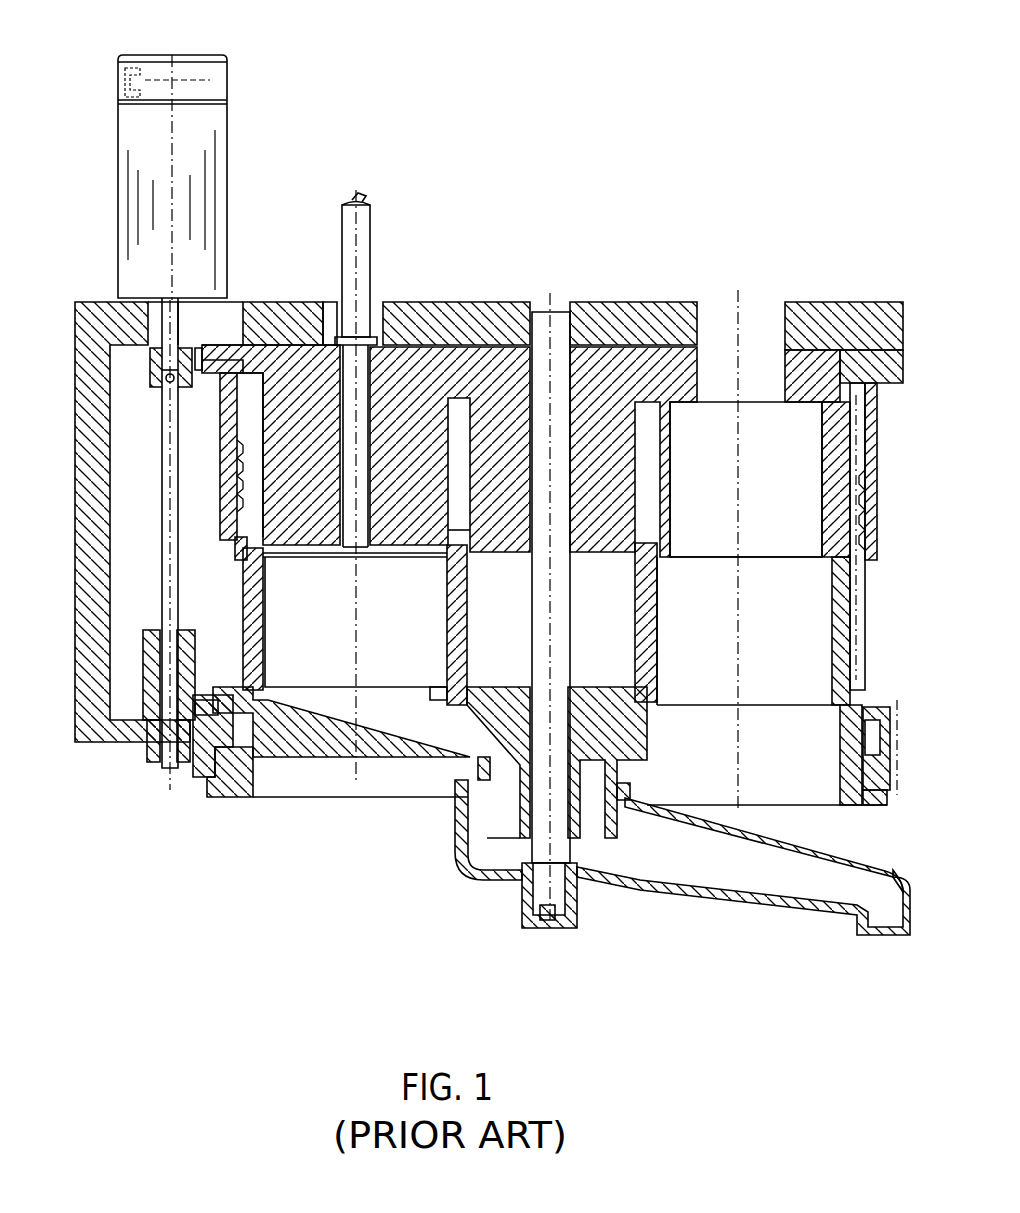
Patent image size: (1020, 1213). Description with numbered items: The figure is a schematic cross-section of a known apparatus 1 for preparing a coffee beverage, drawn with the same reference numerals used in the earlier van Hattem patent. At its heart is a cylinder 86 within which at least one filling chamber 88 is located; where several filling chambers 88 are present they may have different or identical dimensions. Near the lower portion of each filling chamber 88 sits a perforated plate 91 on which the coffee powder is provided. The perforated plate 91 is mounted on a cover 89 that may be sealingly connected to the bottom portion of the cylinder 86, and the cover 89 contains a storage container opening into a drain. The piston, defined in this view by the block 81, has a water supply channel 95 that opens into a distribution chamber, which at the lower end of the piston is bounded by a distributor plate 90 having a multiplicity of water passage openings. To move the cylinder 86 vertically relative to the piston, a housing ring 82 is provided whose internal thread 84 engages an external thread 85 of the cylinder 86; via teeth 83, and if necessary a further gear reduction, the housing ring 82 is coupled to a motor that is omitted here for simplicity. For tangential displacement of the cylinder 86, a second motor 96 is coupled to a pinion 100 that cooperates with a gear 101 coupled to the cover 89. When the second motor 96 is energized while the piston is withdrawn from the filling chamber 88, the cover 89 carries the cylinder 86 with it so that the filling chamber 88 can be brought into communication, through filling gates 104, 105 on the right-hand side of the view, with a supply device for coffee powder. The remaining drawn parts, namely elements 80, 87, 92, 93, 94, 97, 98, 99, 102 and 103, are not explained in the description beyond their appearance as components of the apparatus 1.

The apparatus 1 is at (479, 118).
The housing 80 is at (415, 423).
The block 81 is at (473, 362).
The housing ring 82 is at (257, 348).
The teeth 83 is at (207, 343).
The internal thread 84 is at (243, 487).
The external thread 85 is at (240, 550).
The cylinder 86 is at (248, 617).
The valve stem 87 is at (567, 335).
The filling chamber 88 is at (290, 645).
The cover 89 is at (320, 743).
The distributor plate 90 is at (307, 557).
The perforated plate 91 is at (390, 685).
The bracket 92 is at (718, 907).
The actuator stem 93 is at (355, 300).
The actuator rod 94 is at (362, 237).
The water supply channel 95 is at (367, 395).
The second motor 96 is at (208, 133).
The piston rod 97 is at (170, 317).
The bushing 98 is at (150, 368).
The rod 99 is at (167, 415).
The pinion 100 is at (150, 630).
The gear 101 is at (198, 708).
The bushing 102 is at (203, 765).
The retaining ring 103 is at (228, 727).
The filling gate 104 is at (697, 332).
The filling gate 105 is at (670, 472).